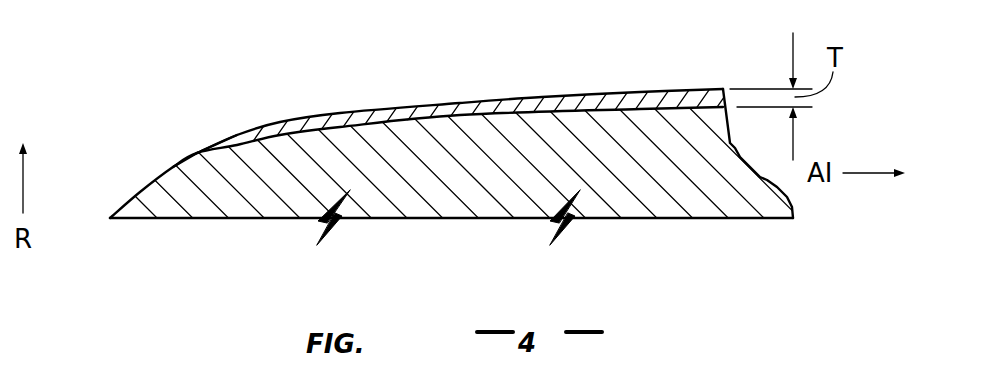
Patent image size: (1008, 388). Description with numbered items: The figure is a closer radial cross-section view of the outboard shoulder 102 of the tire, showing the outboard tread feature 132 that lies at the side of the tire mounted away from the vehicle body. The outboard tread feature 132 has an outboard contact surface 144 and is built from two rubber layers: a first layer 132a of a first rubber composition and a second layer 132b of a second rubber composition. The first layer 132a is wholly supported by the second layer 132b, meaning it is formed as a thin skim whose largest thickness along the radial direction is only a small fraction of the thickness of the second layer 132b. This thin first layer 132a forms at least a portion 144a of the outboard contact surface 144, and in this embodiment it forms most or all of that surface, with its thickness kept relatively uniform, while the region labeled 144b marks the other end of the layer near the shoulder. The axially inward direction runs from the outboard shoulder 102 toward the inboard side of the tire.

The outboard shoulder 102 is at (416, 143).
The outboard tread feature 132 is at (419, 143).
The first layer 132a is at (443, 110).
The second layer 132b is at (227, 197).
The outboard contact surface 144 is at (444, 104).
The portion of the outboard contact surface 144a is at (542, 97).
The leading end of coating 144b is at (173, 167).